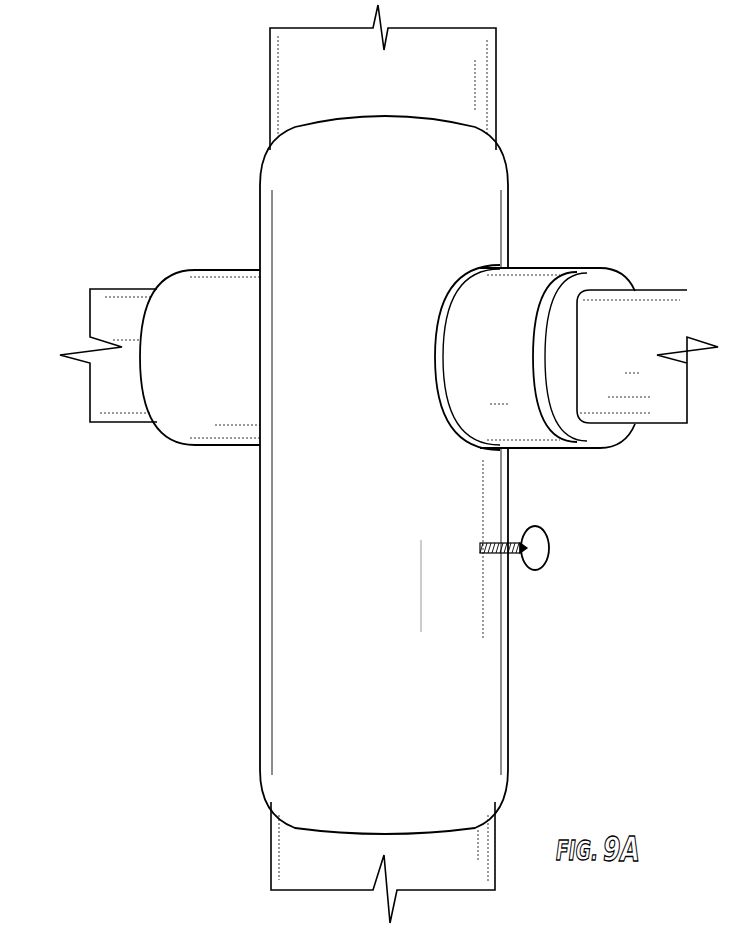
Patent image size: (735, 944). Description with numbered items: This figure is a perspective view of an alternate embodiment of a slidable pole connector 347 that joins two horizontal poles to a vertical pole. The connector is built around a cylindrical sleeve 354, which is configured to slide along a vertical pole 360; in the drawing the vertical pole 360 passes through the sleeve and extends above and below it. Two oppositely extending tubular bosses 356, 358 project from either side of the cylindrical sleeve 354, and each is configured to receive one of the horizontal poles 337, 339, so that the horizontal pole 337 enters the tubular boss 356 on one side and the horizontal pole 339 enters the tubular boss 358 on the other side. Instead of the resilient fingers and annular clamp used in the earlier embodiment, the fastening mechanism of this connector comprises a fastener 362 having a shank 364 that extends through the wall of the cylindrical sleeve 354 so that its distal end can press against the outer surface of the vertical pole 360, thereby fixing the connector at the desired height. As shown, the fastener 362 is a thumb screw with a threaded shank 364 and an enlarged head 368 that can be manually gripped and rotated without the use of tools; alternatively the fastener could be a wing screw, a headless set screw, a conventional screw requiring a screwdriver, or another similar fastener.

The slidable pole connector 347 is at (224, 172).
The horizontal pole 337 is at (130, 318).
The horizontal pole 339 is at (636, 410).
The cylindrical sleeve 354 is at (285, 693).
The tubular boss 356 is at (226, 283).
The tubular boss 358 is at (523, 420).
The vertical pole 360 is at (483, 91).
The fastener 362 is at (505, 556).
The shank 364 is at (490, 540).
The enlarged head 368 is at (538, 548).